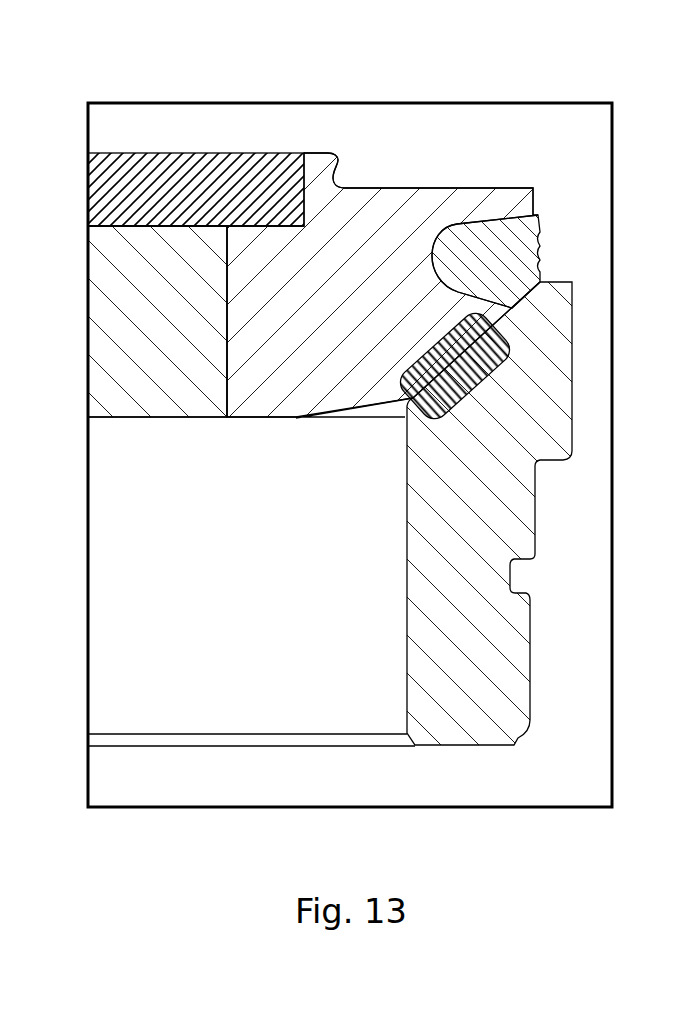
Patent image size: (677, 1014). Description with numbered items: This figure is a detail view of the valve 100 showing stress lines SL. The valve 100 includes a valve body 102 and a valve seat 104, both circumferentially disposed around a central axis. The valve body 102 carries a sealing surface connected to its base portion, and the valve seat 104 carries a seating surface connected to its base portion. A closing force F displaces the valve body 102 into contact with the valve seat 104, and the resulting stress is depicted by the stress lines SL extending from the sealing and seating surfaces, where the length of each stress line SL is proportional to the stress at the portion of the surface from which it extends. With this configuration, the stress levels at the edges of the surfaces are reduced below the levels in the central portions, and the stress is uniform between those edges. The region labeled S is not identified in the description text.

The valve 100 is at (553, 139).
The valve body 102 is at (403, 189).
The valve seat 104 is at (573, 307).
The closing force F is at (284, 153).
The sealing lug / shoulder S is at (540, 228).
The stress line SL is at (442, 322).